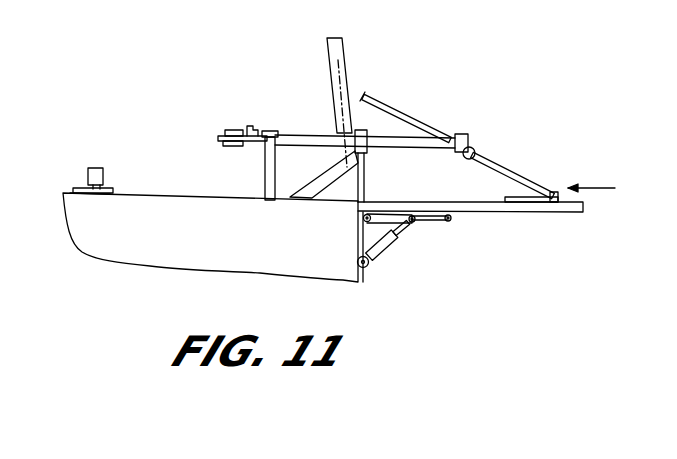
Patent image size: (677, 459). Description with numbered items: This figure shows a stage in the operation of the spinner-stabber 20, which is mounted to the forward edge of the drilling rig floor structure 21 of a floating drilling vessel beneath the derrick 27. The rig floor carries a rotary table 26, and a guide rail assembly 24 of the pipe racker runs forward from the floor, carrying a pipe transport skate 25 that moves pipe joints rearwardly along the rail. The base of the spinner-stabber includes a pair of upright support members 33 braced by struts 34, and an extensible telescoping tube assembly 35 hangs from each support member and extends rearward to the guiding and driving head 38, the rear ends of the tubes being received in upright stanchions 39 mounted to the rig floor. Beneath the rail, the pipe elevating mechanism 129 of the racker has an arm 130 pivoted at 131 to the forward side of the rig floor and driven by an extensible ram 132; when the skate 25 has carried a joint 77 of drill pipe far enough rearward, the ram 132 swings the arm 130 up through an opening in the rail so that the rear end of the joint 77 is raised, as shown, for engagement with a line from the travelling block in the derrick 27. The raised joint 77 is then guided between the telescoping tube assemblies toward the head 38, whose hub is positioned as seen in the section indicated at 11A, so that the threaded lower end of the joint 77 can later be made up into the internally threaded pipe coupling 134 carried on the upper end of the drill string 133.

The section line 11A- 11A is at (240, 112).
The spinner-stabber 20 is at (330, 133).
The drilling rig floor structure 21 is at (283, 247).
The guide rail assembly 24 is at (545, 212).
The pipe transport skate 25 is at (548, 193).
The rotary table 26 is at (110, 188).
The derrick 27 is at (352, 58).
The upright support members 33 is at (365, 185).
The struts 34 is at (330, 173).
The extensible telescoping tube assembly 35 is at (388, 138).
The guiding and driving head 38 is at (226, 145).
The upright stanchions 39 is at (266, 176).
The joint of drill pipe 77 is at (420, 123).
The hydraulic cylinder 129 is at (393, 272).
The arm 130 is at (410, 147).
The pivot 131 is at (358, 218).
The extensible ram 132 is at (392, 249).
The drill string 133 is at (88, 200).
The pipe coupling 134 is at (107, 167).